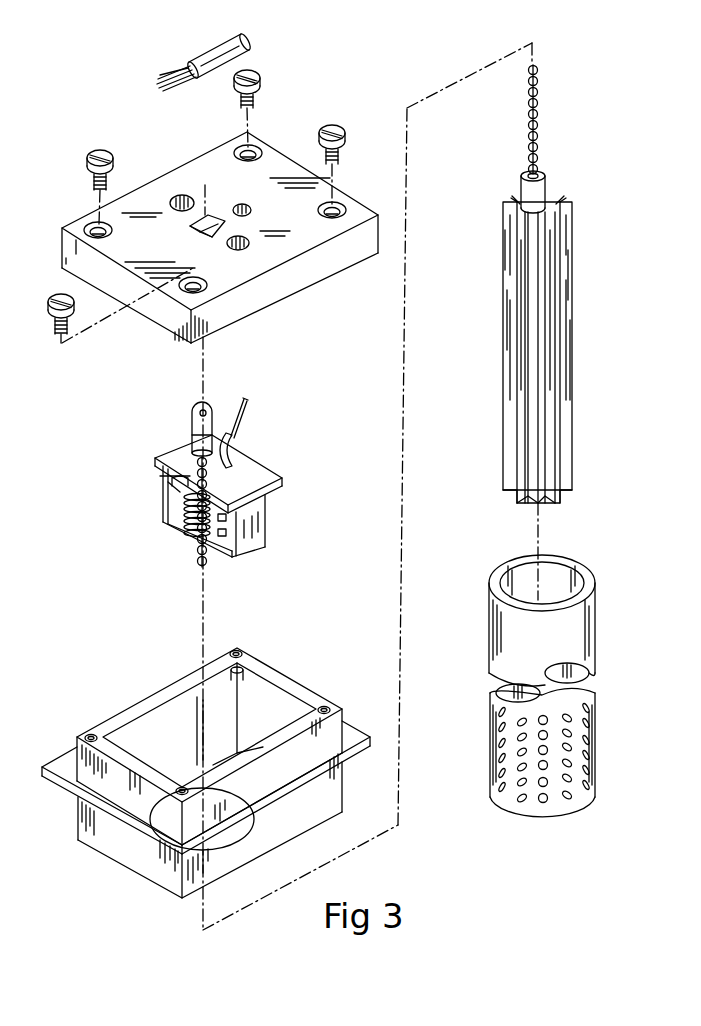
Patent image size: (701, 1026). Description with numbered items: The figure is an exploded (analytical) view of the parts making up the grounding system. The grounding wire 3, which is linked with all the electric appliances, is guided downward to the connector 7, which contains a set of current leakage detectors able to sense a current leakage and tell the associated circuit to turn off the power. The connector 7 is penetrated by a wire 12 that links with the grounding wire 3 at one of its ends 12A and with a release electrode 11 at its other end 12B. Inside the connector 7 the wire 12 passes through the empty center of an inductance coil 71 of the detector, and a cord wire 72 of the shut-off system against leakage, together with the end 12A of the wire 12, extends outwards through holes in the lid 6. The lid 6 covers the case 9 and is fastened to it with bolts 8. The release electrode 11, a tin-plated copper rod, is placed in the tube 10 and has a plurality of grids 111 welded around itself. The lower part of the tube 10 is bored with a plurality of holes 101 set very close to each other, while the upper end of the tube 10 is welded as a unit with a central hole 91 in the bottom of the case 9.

The grounding wire 3 is at (215, 50).
The lid 6 is at (303, 275).
The connector 7 is at (267, 475).
The bolts 8 is at (88, 150).
The case 9 is at (350, 725).
The tube 10 is at (593, 612).
The release electrode 11 is at (553, 205).
The wire 12 is at (198, 552).
The end of the wire 12A is at (208, 412).
The other end of the wire 12B is at (542, 180).
The inductance coil 71 is at (175, 522).
The cord wire 72 is at (238, 415).
The central hole 91 is at (230, 847).
The holes 101 is at (570, 747).
The grids 111 is at (572, 223).